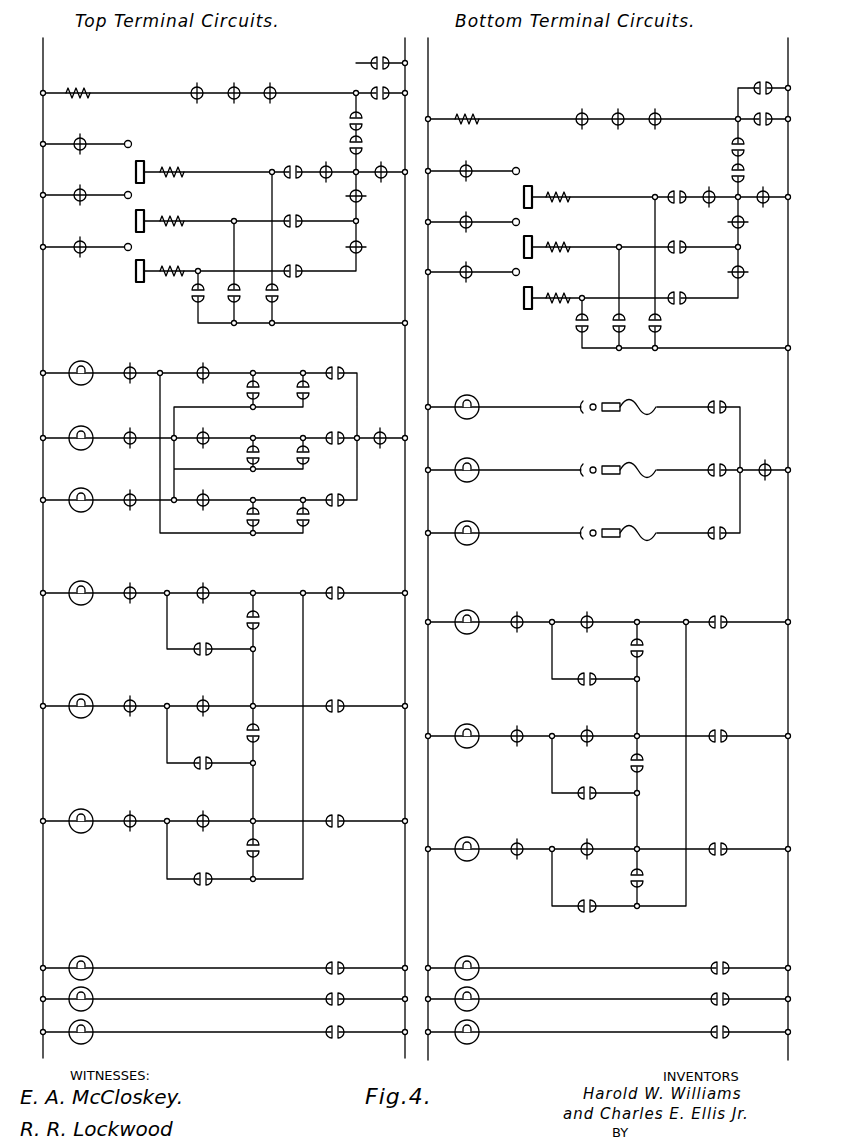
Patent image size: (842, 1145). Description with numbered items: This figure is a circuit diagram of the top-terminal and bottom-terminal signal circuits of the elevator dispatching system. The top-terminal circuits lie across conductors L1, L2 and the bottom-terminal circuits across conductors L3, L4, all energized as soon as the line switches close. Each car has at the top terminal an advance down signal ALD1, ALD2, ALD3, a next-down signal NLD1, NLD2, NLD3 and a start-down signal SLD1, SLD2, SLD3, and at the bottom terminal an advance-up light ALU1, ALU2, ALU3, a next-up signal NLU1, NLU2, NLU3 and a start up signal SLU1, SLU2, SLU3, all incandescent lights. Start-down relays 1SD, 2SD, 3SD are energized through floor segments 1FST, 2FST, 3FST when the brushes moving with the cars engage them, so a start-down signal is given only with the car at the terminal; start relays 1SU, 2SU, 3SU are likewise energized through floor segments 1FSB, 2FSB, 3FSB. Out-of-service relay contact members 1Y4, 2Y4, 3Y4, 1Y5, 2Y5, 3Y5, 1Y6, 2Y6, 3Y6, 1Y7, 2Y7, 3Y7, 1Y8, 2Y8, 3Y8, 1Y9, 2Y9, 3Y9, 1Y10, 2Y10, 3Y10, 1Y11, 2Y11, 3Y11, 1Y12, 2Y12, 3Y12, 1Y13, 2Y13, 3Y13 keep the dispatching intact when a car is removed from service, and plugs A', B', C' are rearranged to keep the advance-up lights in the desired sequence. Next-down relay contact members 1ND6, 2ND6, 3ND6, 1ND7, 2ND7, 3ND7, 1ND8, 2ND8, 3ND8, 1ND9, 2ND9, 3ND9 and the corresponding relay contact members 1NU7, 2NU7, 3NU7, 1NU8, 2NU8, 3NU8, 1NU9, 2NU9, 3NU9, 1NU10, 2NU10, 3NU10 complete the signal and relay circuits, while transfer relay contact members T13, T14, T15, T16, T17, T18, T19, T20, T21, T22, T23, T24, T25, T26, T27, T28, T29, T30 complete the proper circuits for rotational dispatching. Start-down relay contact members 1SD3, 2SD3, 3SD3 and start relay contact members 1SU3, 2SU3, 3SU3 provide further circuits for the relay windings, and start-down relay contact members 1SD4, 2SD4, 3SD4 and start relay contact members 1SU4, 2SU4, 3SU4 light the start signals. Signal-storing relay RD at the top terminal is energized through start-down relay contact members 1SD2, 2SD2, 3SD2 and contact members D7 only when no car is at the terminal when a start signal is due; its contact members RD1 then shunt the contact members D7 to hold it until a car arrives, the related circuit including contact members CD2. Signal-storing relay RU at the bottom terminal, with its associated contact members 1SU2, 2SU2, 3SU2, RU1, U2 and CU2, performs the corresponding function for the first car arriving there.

The line conductor L1 is at (43, 52).
The line conductor L2 is at (405, 40).
The line conductor L3 is at (428, 50).
The line conductor L4 is at (788, 44).
The down relay resistor RD is at (90, 84).
The down selector contact 1SD2 is at (205, 82).
The down selector contact 2SD2 is at (242, 82).
The down selector contact 3SD2 is at (278, 82).
The down relay contact RD1 is at (376, 58).
The down relay contact D7 is at (384, 83).
The down car relay contact CD2 is at (351, 116).
The timer contact T13 is at (360, 140).
The timer contact T14 is at (384, 160).
The switch contact 1Y4 is at (88, 134).
The fuse 1FST is at (135, 175).
The down selector resistor 1SD is at (178, 162).
The down relay contact 1ND6 is at (288, 168).
The down relay contact 3ND6 is at (332, 162).
The down relay contact 1ND7 is at (363, 200).
The down relay contact 2ND7 is at (363, 252).
The switch contact 2Y4 is at (88, 185).
The fuse 2FST is at (135, 215).
The down selector resistor 2SD is at (178, 211).
The down relay contact 2ND6 is at (305, 210).
The switch contact 3Y4 is at (88, 237).
The fuse 3FST is at (135, 266).
The down selector resistor 3SD is at (178, 261).
The down relay contact 3ND7 is at (305, 260).
The down selector contact 3SD3 is at (192, 302).
The down selector contact 2SD3 is at (238, 292).
The down selector contact 1SD3 is at (277, 304).
The down arrival lamp ALD1 is at (95, 361).
The switch contact 1Y6 is at (138, 361).
The switch contact 3Y6 is at (211, 362).
The down relay contact 2ND8 is at (343, 362).
The switch contact 1Y7 is at (246, 393).
The switch contact 3Y7 is at (309, 394).
The down arrival lamp ALD2 is at (95, 426).
The switch contact 2Y6 is at (138, 427).
The switch contact 1Y8 is at (211, 427).
The down relay contact 3ND8 is at (343, 427).
The timer contact T17 is at (388, 427).
The switch contact 2Y7 is at (246, 458).
The switch contact 1Y9 is at (309, 459).
The down arrival lamp ALD3 is at (95, 488).
The switch contact 3Y8 is at (138, 489).
The switch contact 2Y8 is at (211, 489).
The down relay contact 1ND8 is at (343, 489).
The switch contact 3Y9 is at (246, 522).
The switch contact 2Y9 is at (309, 522).
The down next lamp NLD1 is at (98, 580).
The switch contact 1Y10 is at (138, 582).
The timer contact T19 is at (211, 582).
The down relay contact 3ND9 is at (345, 582).
The switch contact 1Y11 is at (258, 627).
The timer contact T21 is at (212, 638).
The down next lamp NLD2 is at (98, 694).
The switch contact 2Y10 is at (138, 695).
The timer contact T23 is at (211, 695).
The down relay contact 1ND9 is at (345, 695).
The switch contact 2Y11 is at (258, 740).
The timer contact T25 is at (212, 752).
The down next lamp NLD3 is at (98, 808).
The switch contact 3Y10 is at (138, 810).
The timer contact T27 is at (211, 810).
The down relay contact 2ND9 is at (345, 810).
The switch contact 3Y11 is at (258, 855).
The timer contact T29 is at (212, 868).
The down signal lamp SLD1 is at (98, 955).
The down selector contact 1SD4 is at (345, 957).
The down signal lamp SLD2 is at (92, 990).
The down selector contact 2SD4 is at (345, 989).
The down signal lamp SLD3 is at (92, 1023).
The down selector contact 3SD4 is at (345, 1022).
The up relay resistor RU is at (478, 109).
The up selector contact 1SU2 is at (590, 108).
The up selector contact 2SU2 is at (626, 108).
The up selector contact 3SU2 is at (663, 108).
The up relay contact RU1 is at (768, 77).
The up relay contact U2 is at (768, 109).
The up car relay contact CU2 is at (732, 142).
The timer contact T15 is at (742, 166).
The timer contact T16 is at (768, 186).
The switch contact 1Y5 is at (474, 161).
The fuse 1FSB is at (523, 198).
The up selector resistor 1SU is at (564, 187).
The up relay contact 1NU7 is at (670, 194).
The up relay contact 3NU7 is at (720, 190).
The up relay contact 1NU8 is at (744, 228).
The up relay contact 2NU8 is at (756, 270).
The switch contact 2Y5 is at (474, 212).
The fuse 2FSB is at (523, 248).
The up selector resistor 2SU is at (564, 237).
The up relay contact 2NU7 is at (689, 237).
The switch contact 3Y5 is at (474, 263).
The fuse 3FSB is at (523, 298).
The up selector resistor 3SU is at (564, 288).
The up relay contact 3NU8 is at (689, 288).
The up selector contact 3SU3 is at (577, 330).
The up selector contact 2SU3 is at (626, 326).
The up selector contact 1SU3 is at (661, 328).
The up arrival lamp ALU1 is at (484, 394).
The jack B' is at (618, 396).
The up relay contact 2NU9 is at (726, 395).
The up arrival lamp ALU2 is at (484, 457).
The jack C' is at (618, 460).
The up relay contact 3NU9 is at (726, 459).
The timer contact T18 is at (771, 459).
The up arrival lamp ALU3 is at (484, 520).
The jack A' is at (618, 523).
The up relay contact 1NU9 is at (715, 527).
The up next lamp NLU1 is at (486, 609).
The switch contact 1Y12 is at (525, 611).
The timer contact T20 is at (595, 611).
The up relay contact 3NU10 is at (730, 611).
The switch contact 1Y13 is at (652, 658).
The timer contact T22 is at (596, 668).
The up next lamp NLU2 is at (486, 723).
The switch contact 2Y12 is at (525, 725).
The timer contact T24 is at (595, 725).
The up relay contact 1NU10 is at (730, 725).
The switch contact 2Y13 is at (642, 770).
The timer contact T26 is at (596, 782).
The up next lamp NLU3 is at (482, 836).
The switch contact 3Y12 is at (525, 838).
The timer contact T28 is at (595, 838).
The up relay contact 2NU10 is at (730, 838).
The switch contact 3Y13 is at (642, 885).
The timer contact T30 is at (598, 896).
The up signal lamp SLU1 is at (484, 955).
The up selector contact 1SU4 is at (730, 957).
The up signal lamp SLU2 is at (479, 990).
The up selector contact 2SU4 is at (730, 989).
The up signal lamp SLU3 is at (479, 1023).
The up selector contact 3SU4 is at (730, 1022).